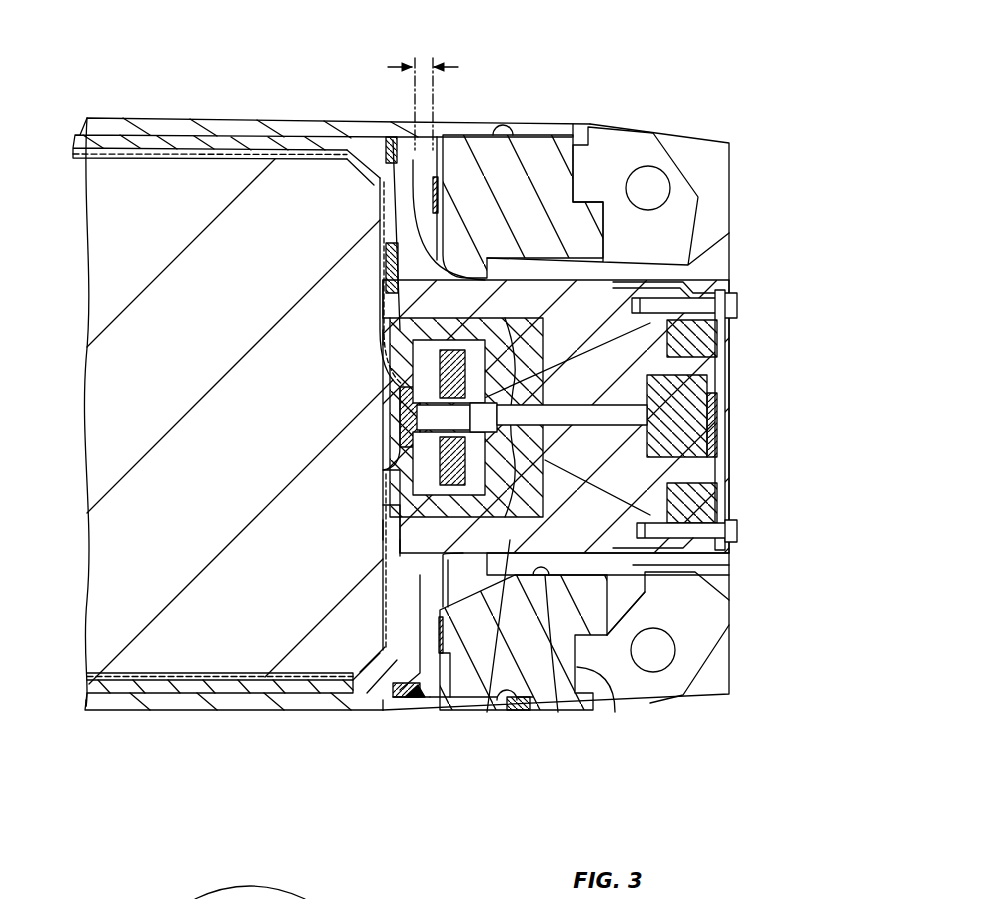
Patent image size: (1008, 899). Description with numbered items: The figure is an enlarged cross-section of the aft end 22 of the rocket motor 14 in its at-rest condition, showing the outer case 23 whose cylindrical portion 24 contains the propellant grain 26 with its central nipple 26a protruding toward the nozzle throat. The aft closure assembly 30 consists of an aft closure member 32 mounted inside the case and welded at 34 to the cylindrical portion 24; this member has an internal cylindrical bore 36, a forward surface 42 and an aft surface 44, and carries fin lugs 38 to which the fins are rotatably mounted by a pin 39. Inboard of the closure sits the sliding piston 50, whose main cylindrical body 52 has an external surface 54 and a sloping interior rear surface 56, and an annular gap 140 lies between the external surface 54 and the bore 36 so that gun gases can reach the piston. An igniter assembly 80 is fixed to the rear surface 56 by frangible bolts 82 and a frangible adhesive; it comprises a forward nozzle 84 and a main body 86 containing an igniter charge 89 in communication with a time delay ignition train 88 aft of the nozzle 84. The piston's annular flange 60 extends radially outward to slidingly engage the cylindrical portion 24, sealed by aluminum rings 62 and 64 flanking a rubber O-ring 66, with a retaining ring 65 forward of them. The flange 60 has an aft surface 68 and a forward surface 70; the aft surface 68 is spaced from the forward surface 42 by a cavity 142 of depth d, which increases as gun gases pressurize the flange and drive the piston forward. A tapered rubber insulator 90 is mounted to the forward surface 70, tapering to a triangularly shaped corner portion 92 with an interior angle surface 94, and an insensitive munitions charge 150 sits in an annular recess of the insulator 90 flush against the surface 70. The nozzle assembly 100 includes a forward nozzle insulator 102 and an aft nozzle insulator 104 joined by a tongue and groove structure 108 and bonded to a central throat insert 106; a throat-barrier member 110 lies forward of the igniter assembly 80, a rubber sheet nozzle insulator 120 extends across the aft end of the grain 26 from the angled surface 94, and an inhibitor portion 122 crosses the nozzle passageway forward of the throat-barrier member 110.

The rocket motor 14 is at (205, 742).
The aft end 22 is at (738, 167).
The outer case 23 is at (575, 110).
The cylindrical portion 24 is at (162, 703).
The propellant grain 26 is at (137, 256).
The central nipple 26a is at (385, 390).
The aft closure assembly 30 is at (627, 108).
The aft closure member 32 is at (533, 700).
The weld 34 is at (517, 124).
The internal cylindrical bore 36 is at (558, 712).
The fin lugs 38 is at (637, 690).
The pin 39 is at (663, 648).
The forward surface 42 is at (440, 697).
The aft surface 44 is at (613, 712).
The sliding piston 50 is at (400, 548).
The main cylindrical body 52 is at (488, 712).
The external surface 54 is at (577, 558).
The sloping interior rear surface 56 is at (587, 357).
The annular flange 60 is at (420, 617).
The aluminum ring 62 is at (395, 135).
The aluminum ring 64 is at (430, 700).
The retaining ring 65 is at (375, 700).
The rubber O-ring 66 is at (408, 700).
The aft surface 68 is at (377, 177).
The forward surface 70 is at (377, 210).
The igniter assembly 80 is at (738, 330).
The frangible bolts 82 is at (728, 525).
The forward nozzle 84 is at (513, 350).
The main body 86 is at (658, 473).
The time delay ignition train 88 is at (630, 417).
The igniter charge 89 is at (692, 378).
The tapered rubber insulator 90 is at (380, 293).
The triangularly shaped corner portion 92 is at (363, 700).
The interior angle surface 94 is at (368, 663).
The nozzle assembly 100 is at (436, 467).
The forward nozzle insulator 102 is at (390, 347).
The aft nozzle insulator 104 is at (387, 320).
The throat insert 106 is at (435, 448).
The tongue and groove interlocking structure 108 is at (385, 512).
The throat-barrier member 110 is at (417, 418).
The rubber sheet nozzle insulator 120 is at (385, 532).
The inhibitor portion 122 is at (385, 408).
The annular gap 140 is at (633, 565).
The cavity 142 is at (423, 203).
The insensitive munitions charge 150 is at (400, 570).